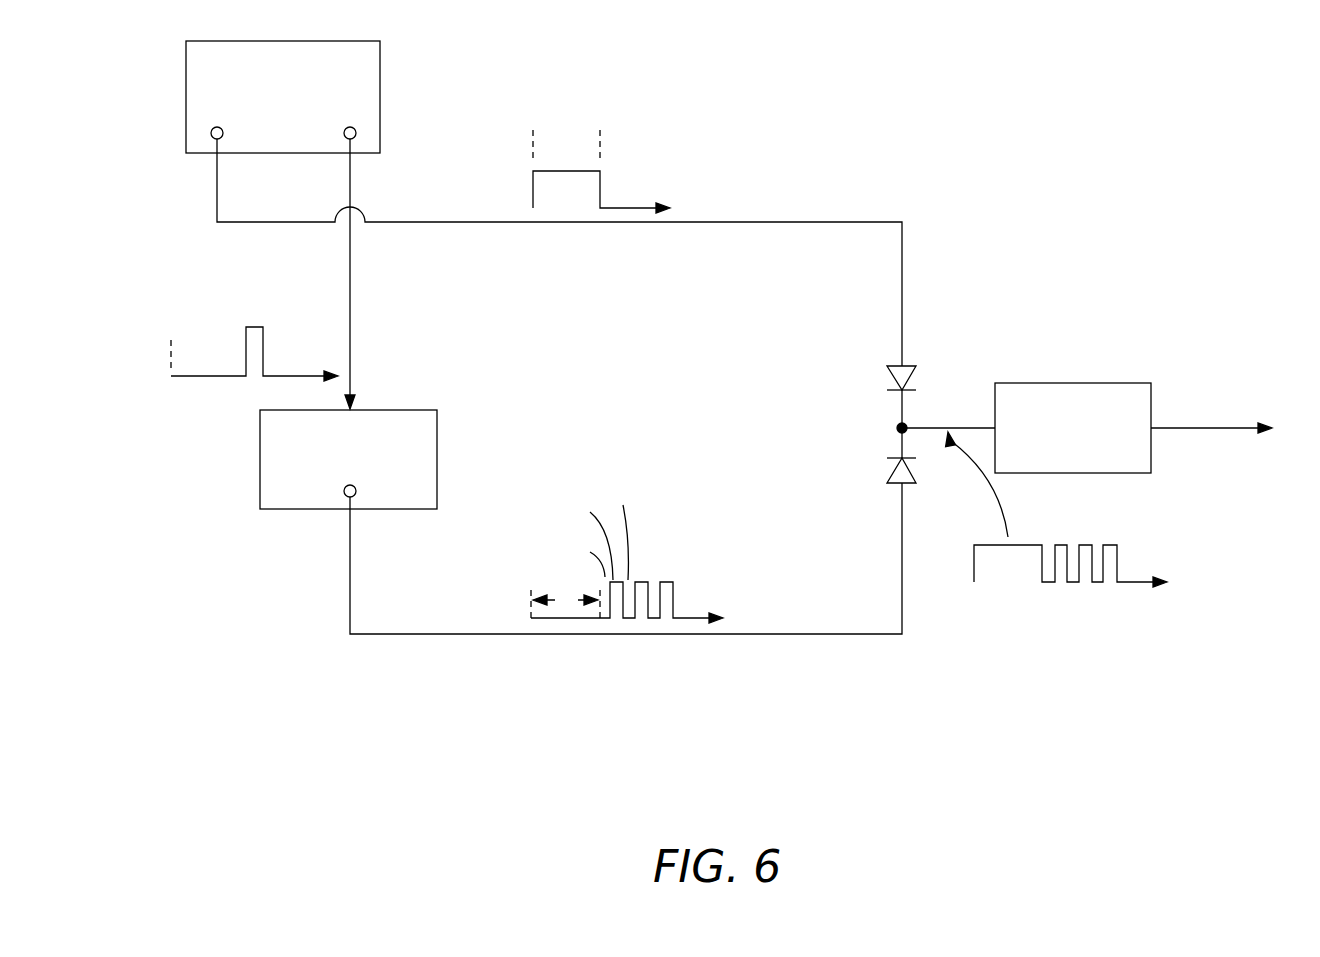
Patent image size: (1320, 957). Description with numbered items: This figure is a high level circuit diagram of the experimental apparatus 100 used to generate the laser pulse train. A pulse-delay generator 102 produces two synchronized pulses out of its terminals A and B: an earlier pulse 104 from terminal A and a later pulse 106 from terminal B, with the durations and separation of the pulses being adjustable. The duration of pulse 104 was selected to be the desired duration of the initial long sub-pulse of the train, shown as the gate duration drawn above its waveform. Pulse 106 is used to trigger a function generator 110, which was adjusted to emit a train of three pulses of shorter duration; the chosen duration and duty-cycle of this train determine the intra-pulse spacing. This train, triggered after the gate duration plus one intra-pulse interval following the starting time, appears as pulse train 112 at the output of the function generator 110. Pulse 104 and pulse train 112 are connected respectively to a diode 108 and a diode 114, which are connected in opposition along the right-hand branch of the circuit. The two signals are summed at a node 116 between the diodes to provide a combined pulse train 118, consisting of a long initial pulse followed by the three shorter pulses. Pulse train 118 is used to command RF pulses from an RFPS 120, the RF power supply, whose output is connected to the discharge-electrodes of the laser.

The experimental apparatus 100 is at (998, 759).
The pulse-delay generator 102 is at (380, 80).
The pulse 104 is at (628, 172).
The pulse 106 is at (226, 312).
The diode 108 is at (926, 369).
The function generator 110 is at (260, 452).
The pulse train 112 is at (664, 547).
The diode 114 is at (871, 478).
The node 116 is at (897, 427).
The pulse train 118 is at (1083, 603).
The RFPS 120 is at (1117, 385).